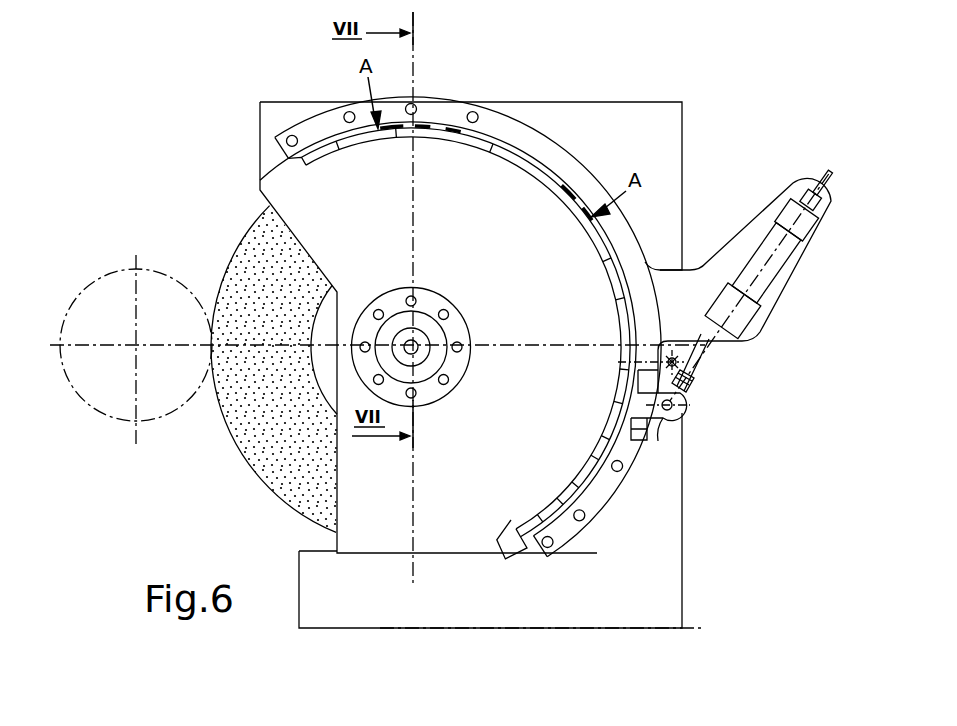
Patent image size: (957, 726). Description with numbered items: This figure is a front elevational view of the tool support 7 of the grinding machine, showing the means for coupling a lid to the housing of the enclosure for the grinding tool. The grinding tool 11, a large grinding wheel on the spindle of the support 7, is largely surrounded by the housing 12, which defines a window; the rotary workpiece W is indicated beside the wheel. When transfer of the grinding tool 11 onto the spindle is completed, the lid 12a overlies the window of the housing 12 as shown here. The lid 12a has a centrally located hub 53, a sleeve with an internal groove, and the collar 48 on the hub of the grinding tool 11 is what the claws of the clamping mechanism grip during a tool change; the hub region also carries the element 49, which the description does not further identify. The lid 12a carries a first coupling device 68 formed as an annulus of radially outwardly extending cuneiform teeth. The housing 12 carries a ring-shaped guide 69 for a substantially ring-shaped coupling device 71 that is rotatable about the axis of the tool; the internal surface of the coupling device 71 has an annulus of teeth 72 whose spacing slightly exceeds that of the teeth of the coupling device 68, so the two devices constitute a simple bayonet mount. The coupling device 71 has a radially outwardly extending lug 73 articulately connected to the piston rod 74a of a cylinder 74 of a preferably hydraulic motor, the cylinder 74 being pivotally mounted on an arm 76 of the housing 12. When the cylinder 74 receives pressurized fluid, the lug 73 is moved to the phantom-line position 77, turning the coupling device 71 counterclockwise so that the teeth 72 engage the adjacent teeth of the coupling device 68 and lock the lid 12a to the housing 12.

The tool support 7 is at (621, 128).
The grinding tool 11 is at (246, 420).
The housing 12 is at (524, 133).
The lid 12a is at (499, 208).
The collar 48 is at (418, 355).
The hub 49 is at (436, 336).
The hub 53 is at (430, 306).
The first coupling device 68 is at (616, 366).
The ring-shaped guide 69 is at (598, 500).
The ring-shaped coupling device 71 is at (634, 420).
The teeth 72 is at (551, 520).
The lug 73 is at (681, 420).
The cylinder 74 is at (772, 258).
The piston rod 74a is at (703, 357).
The arm 76 is at (692, 286).
The phantom-line position 77 is at (668, 338).
The workpiece W is at (103, 298).